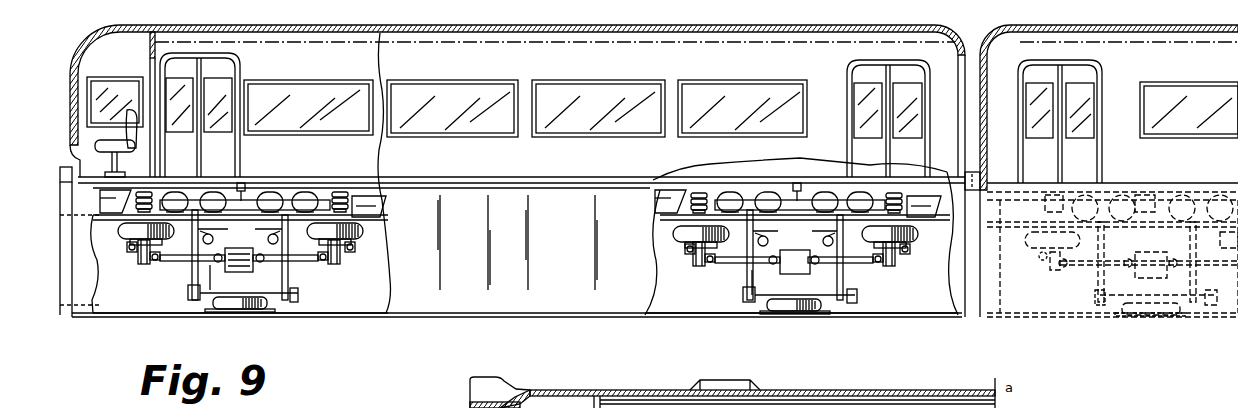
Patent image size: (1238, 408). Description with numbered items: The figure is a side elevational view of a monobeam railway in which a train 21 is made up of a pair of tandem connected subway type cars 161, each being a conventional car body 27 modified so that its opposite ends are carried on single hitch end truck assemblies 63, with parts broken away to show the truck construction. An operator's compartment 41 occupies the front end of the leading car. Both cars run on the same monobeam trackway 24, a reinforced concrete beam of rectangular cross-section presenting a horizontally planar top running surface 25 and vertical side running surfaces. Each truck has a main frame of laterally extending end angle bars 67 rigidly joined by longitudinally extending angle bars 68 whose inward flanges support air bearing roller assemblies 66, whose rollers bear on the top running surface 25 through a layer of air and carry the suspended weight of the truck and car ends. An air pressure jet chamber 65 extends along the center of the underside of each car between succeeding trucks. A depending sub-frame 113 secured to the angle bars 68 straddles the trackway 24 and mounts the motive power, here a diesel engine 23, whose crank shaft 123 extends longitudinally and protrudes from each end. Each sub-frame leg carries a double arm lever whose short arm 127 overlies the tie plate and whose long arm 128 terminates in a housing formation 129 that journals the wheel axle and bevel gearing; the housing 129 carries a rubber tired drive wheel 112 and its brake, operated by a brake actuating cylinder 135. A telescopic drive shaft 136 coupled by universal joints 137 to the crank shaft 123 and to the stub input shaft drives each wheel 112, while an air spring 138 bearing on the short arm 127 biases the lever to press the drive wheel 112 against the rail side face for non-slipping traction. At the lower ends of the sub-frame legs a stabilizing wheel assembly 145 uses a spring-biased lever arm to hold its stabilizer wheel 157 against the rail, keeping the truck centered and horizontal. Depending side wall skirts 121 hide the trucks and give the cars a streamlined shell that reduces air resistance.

The train 21 is at (673, 27).
The operator's compartment 41 is at (103, 45).
The subway type car 161 is at (993, 48).
The air bearing roller assembly 66 is at (308, 192).
The longitudinal angle bar 68 is at (333, 191).
The end angle bar 67 is at (136, 201).
The air pressure jet chamber 65 is at (374, 201).
The top running surface 25 is at (390, 218).
The drive wheel 112 is at (118, 231).
The brake actuating cylinder 135 is at (127, 247).
The universal joint 137 is at (148, 265).
The housing formation 129 is at (150, 260).
The long arm 128 is at (186, 262).
The telescopic drive shaft 136 is at (315, 262).
The short arm 127 is at (215, 233).
The air spring 138 is at (214, 240).
The crank shaft 123 is at (232, 272).
The diesel engine 23 is at (256, 264).
The sub-frame 113 is at (186, 281).
The stabilizer wheel 157 is at (227, 310).
The stabilizing wheel assembly 145 is at (265, 323).
The monobeam trackway 24 is at (362, 299).
The single hitch end truck assembly 63 is at (190, 306).
The side wall skirt 121 is at (550, 250).
The car body 27 is at (868, 386).